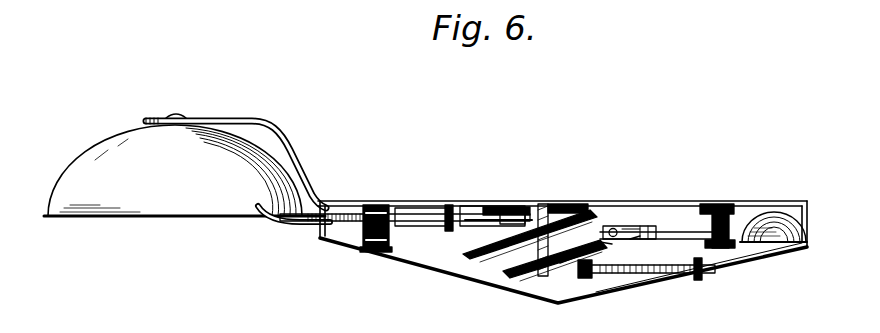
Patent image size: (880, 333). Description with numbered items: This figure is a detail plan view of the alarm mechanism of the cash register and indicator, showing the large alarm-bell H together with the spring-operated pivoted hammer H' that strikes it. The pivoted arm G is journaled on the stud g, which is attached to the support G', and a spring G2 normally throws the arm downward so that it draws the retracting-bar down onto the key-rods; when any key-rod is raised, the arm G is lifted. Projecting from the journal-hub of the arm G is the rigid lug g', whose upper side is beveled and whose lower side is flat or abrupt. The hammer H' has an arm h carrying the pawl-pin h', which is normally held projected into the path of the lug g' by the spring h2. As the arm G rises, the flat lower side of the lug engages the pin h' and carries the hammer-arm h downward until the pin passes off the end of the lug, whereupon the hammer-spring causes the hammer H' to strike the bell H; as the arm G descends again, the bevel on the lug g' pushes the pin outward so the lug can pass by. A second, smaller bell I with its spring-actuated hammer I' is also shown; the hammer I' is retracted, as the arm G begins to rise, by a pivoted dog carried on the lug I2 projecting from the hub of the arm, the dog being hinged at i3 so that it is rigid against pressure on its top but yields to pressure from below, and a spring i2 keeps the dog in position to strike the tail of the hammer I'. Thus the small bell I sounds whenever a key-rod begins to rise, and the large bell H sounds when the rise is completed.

The alarm-bell H is at (184, 170).
The spring-operated pivoted hammer H' is at (238, 182).
The pivoted arm G is at (562, 256).
The hammer-arm h is at (405, 231).
The spring h2 is at (468, 223).
The rigid lug g' is at (498, 195).
The pawl-pin h' is at (525, 196).
The support G' is at (563, 226).
The spring G2 is at (497, 265).
The stud g is at (561, 281).
The lug I2 is at (633, 229).
The pivot i3 is at (633, 235).
The spring i2 is at (608, 239).
The spring-actuated hammer I' is at (667, 226).
The smaller bell I is at (773, 213).